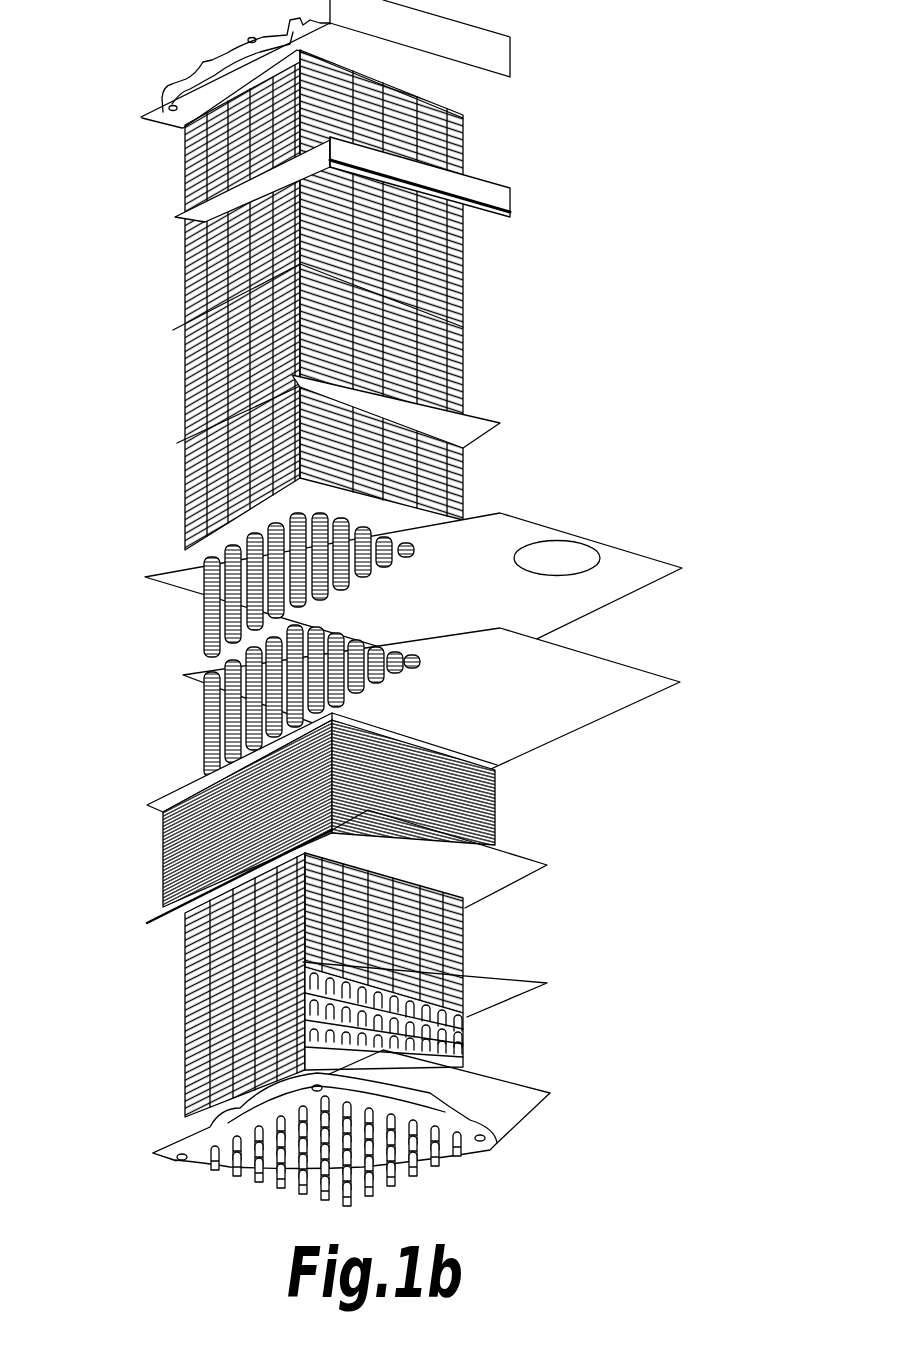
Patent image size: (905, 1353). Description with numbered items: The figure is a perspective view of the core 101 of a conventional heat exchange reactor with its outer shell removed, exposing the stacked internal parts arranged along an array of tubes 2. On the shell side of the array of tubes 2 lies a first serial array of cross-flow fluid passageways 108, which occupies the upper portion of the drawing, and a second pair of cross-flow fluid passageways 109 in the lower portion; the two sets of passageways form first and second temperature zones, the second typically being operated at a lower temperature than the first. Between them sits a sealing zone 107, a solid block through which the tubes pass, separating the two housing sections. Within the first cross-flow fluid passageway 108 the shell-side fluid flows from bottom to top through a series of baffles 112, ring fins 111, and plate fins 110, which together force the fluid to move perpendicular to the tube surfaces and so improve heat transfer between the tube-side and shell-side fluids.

The core 101 is at (590, 185).
The first cross-flow fluid passageway 108 is at (89, 115).
The sealing zone 107 is at (97, 800).
The second pair of cross-flow fluid passageways 109 is at (97, 930).
The plate fins 110 is at (460, 303).
The ring fins 111 is at (196, 719).
The baffles 112 is at (457, 427).
The array of tubes 2 is at (284, 1198).